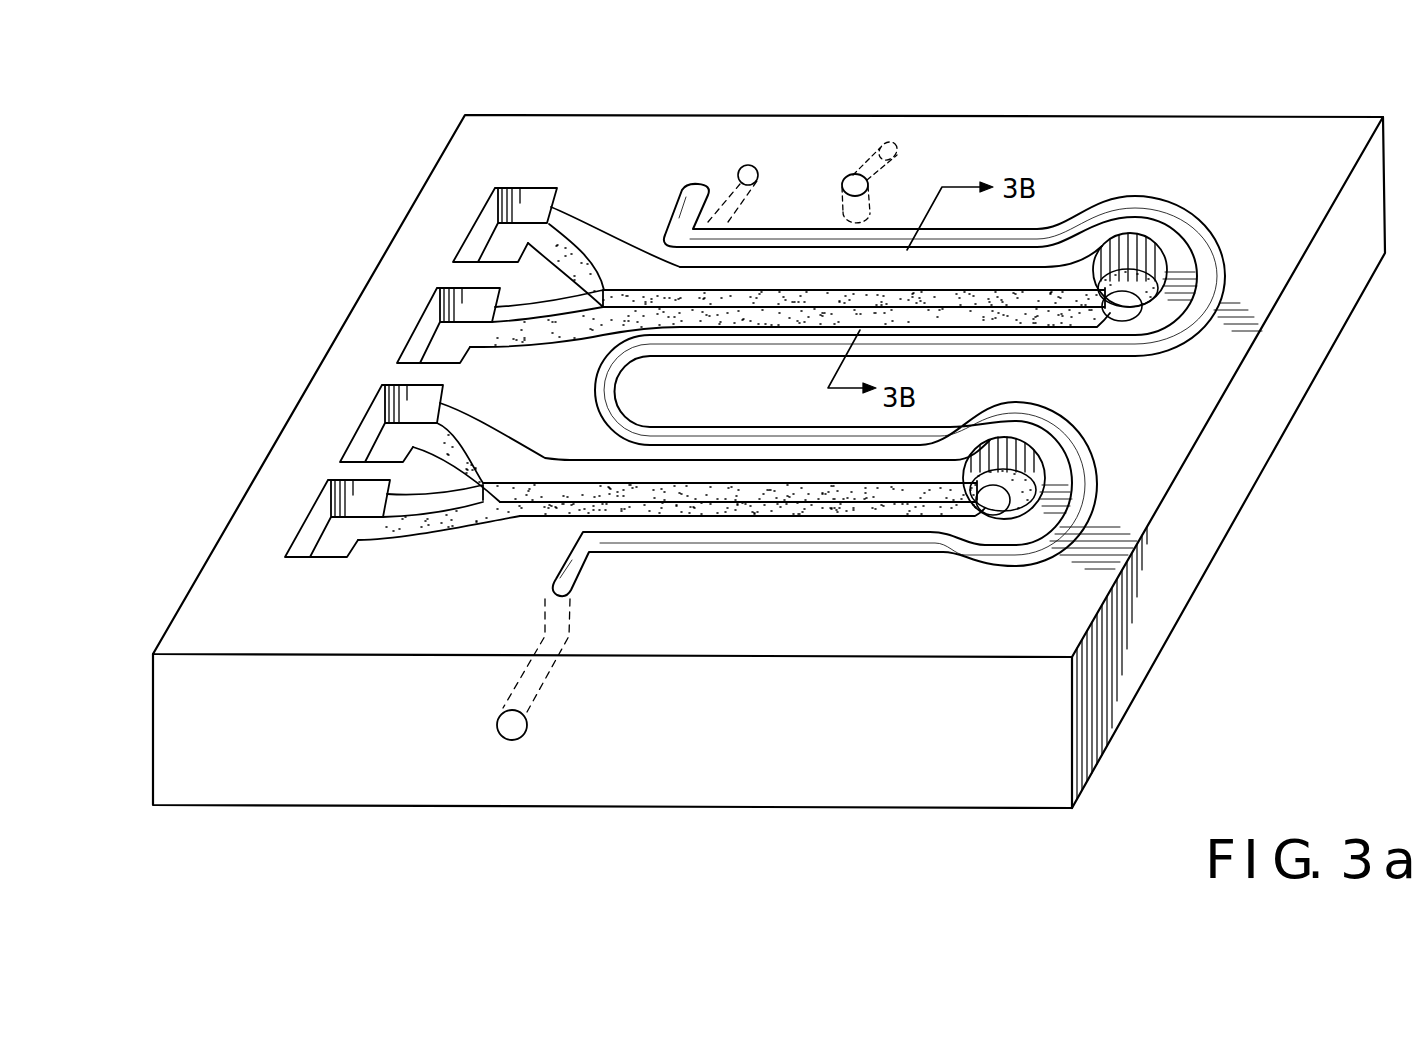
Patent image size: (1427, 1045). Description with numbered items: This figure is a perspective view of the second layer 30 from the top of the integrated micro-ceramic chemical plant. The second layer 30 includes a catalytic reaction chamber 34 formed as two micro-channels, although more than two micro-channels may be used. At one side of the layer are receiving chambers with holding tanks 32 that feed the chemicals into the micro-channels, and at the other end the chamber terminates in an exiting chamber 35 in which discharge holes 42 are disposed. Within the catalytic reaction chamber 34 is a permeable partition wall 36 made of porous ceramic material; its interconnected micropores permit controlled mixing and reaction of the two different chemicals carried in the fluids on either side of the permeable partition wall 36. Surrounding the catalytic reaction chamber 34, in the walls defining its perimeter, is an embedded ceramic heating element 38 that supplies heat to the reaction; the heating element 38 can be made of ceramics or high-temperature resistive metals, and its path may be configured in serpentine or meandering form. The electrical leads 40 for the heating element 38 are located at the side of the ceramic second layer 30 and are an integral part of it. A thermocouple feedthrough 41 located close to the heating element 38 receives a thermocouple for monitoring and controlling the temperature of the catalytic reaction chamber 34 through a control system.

The second layer 30 is at (1198, 603).
The holding tanks 32 is at (512, 237).
The catalytic reaction chamber 34 is at (590, 262).
The exiting chamber 35 is at (1140, 250).
The permeable partition wall 36 is at (963, 298).
The heating element 38 is at (1158, 337).
The electrical leads 40 is at (753, 168).
The thermocouple feedthrough 41 is at (893, 150).
The discharge holes 42 is at (1132, 287).